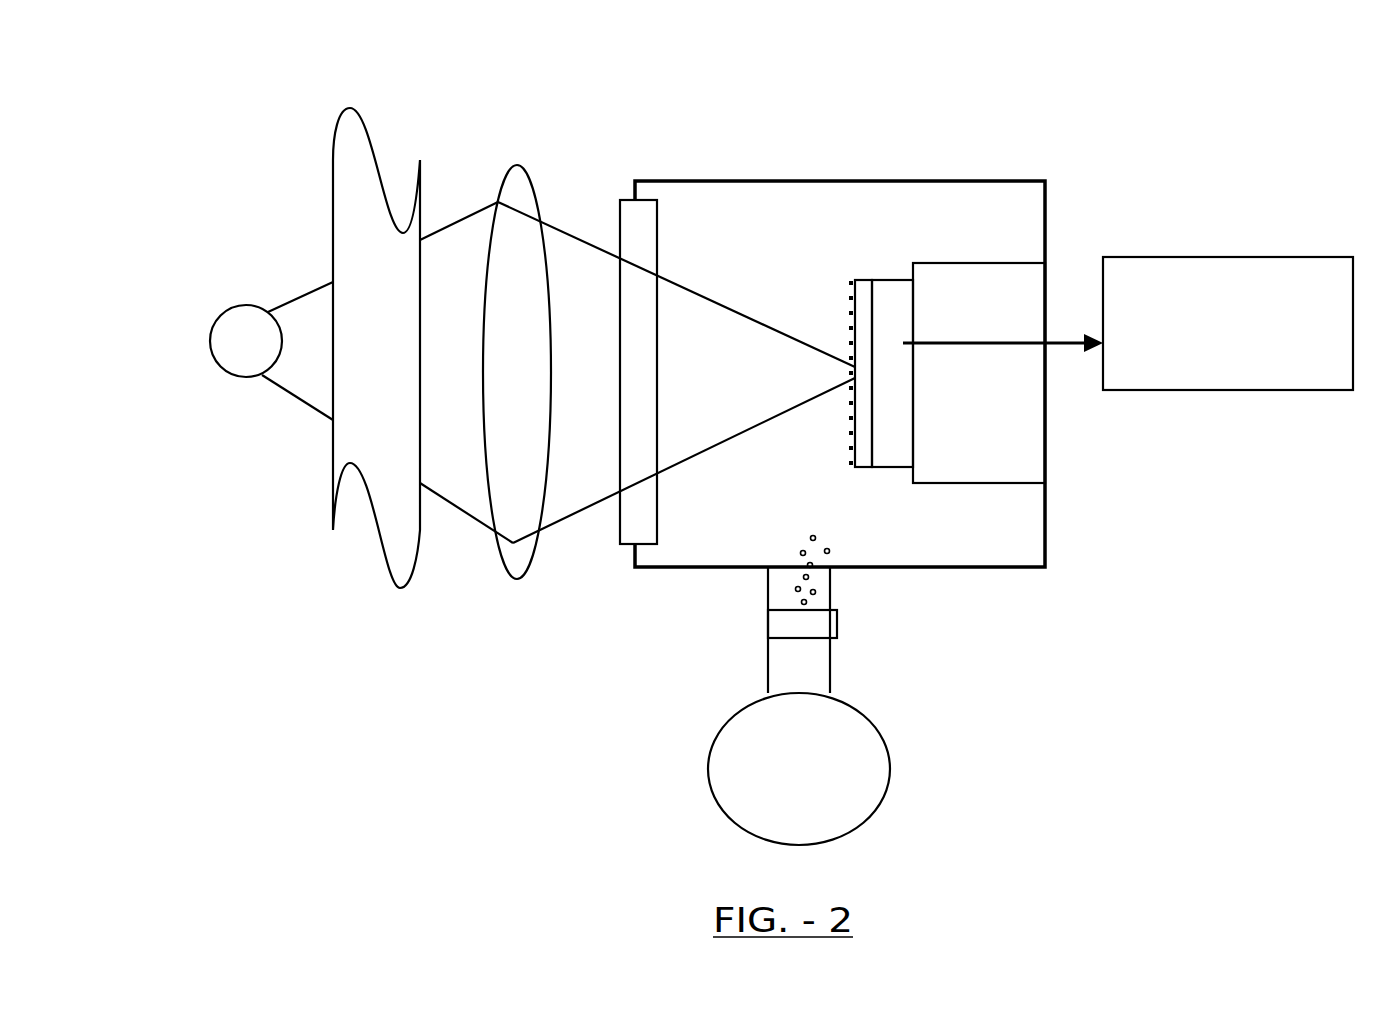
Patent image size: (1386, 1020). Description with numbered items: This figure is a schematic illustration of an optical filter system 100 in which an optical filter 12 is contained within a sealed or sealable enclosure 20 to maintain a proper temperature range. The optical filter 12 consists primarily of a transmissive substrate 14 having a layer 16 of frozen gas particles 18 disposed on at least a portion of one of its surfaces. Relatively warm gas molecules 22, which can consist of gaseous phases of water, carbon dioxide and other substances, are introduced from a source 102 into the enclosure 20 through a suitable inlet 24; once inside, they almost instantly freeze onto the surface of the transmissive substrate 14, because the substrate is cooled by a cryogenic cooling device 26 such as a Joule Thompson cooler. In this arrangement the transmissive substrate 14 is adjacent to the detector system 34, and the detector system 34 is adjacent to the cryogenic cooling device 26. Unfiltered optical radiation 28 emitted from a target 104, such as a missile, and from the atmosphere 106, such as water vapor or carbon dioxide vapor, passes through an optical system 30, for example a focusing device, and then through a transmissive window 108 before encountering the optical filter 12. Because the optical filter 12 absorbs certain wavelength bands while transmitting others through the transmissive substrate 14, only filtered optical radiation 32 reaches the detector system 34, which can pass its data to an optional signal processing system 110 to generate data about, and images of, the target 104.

The optical filter system 100 is at (1078, 122).
The target 104 is at (212, 332).
The atmosphere 106 is at (333, 480).
The optical system 30 is at (505, 190).
The unfiltered optical radiation 28 is at (582, 240).
The transmissive window 108 is at (658, 247).
The enclosure 20 is at (953, 183).
The cryogenic cooling device 26 is at (972, 262).
The optical filter 12 is at (847, 476).
The transmissive substrate 14 is at (865, 468).
The detector system 34 is at (890, 278).
The frozen gas particles 18 is at (850, 297).
The layer 16 is at (850, 430).
The filtered optical radiation 32 is at (1073, 338).
The signal processing system 110 is at (1217, 257).
The gas molecules 22 is at (822, 536).
The inlet 24 is at (768, 658).
The source 102 is at (890, 755).